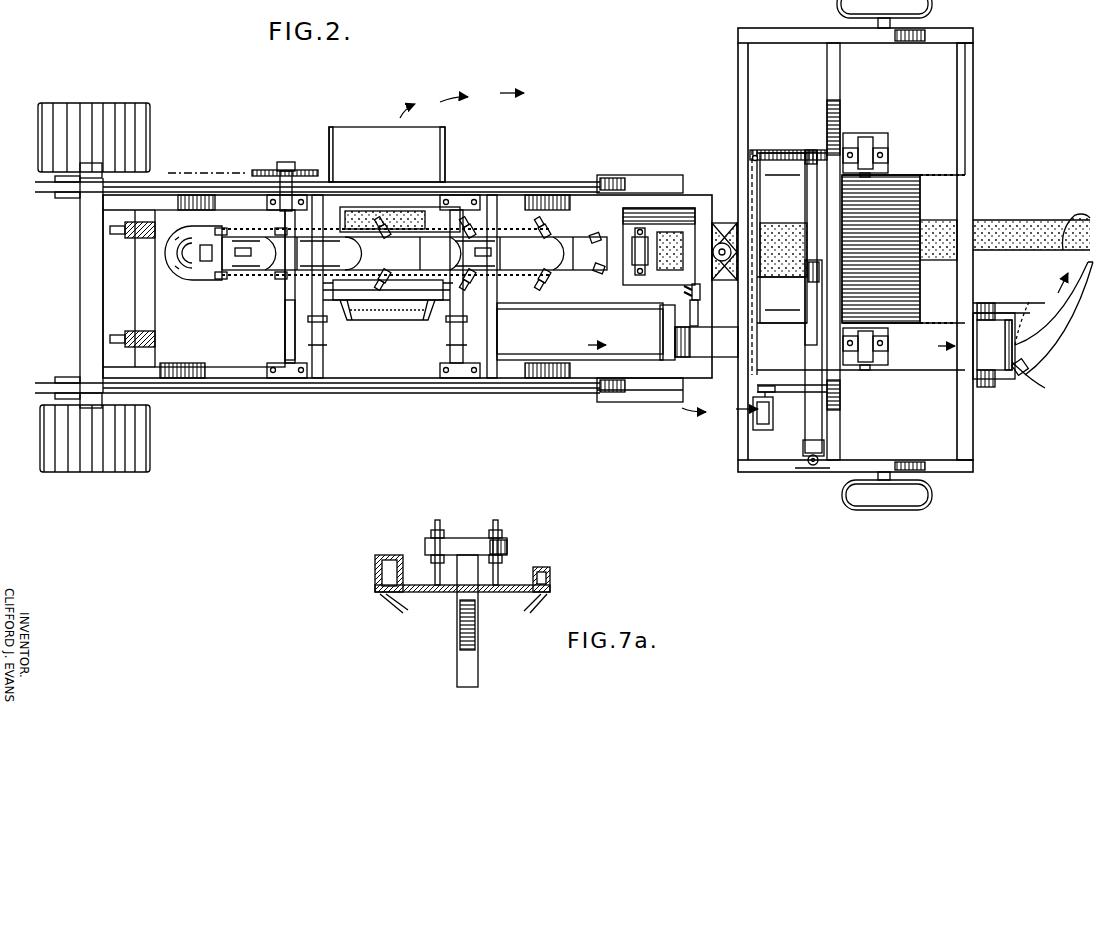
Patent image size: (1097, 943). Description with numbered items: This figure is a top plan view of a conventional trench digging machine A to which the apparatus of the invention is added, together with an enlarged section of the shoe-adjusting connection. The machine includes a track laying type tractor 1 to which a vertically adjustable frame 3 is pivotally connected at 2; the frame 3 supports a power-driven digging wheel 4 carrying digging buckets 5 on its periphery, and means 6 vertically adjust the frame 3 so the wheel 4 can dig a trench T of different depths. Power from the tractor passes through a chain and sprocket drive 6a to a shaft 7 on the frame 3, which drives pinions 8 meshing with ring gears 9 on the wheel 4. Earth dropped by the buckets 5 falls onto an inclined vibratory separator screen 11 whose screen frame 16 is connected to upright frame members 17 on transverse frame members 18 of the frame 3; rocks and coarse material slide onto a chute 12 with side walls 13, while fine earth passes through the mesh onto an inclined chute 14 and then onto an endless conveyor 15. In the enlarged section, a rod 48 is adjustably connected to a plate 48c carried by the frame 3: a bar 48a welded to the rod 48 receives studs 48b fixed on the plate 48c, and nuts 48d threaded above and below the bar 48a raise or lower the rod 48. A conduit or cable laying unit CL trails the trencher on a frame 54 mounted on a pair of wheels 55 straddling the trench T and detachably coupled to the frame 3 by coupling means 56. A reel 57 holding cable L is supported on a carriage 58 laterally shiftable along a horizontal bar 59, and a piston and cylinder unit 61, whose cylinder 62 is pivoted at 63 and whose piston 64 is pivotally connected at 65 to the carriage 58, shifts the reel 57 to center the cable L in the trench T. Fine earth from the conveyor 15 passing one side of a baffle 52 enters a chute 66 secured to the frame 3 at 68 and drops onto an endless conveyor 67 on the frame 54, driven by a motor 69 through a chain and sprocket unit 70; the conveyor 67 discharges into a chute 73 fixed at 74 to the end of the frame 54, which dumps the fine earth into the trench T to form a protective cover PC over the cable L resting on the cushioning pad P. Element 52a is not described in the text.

In FIG. 2, the track laying type tractor 1 is at (112, 474).
In FIG. 2, the pivotal connection 2 is at (140, 238).
In FIG. 2, the vertically adjustable frame 3 is at (256, 372).
In FIG. 7a, the vertically adjustable frame 3 is at (372, 569).
In FIG. 2, the power-driven digging wheel 4 is at (180, 278).
In FIG. 2, the digging buckets 5 is at (200, 262).
In FIG. 2, the vertical adjusting means 6 is at (176, 397).
In FIG. 2, the chain and sprocket drive 6a is at (260, 170).
In FIG. 2, the shaft 7 is at (284, 334).
In FIG. 2, the pinions 8 is at (280, 277).
In FIG. 2, the ring gears 9 is at (245, 276).
In FIG. 2, the vibratory separator screen 11 is at (383, 203).
In FIG. 2, the chute 12 is at (446, 140).
In FIG. 2, the side walls 13 is at (334, 150).
In FIG. 2, the inclined chute 14 is at (392, 313).
In FIG. 2, the endless conveyor 15 is at (545, 340).
In FIG. 2, the screen frame 16 is at (378, 306).
In FIG. 2, the upright frame members 17 is at (455, 318).
In FIG. 2, the transverse frame members 18 is at (462, 345).
In FIG. 7a, the rod 48 is at (468, 654).
In FIG. 2, the bar 48a is at (645, 263).
In FIG. 7a, the bar 48a is at (505, 550).
In FIG. 7a, the studs 48b is at (495, 525).
In FIG. 2, the plate 48c is at (684, 208).
In FIG. 7a, the plate 48c is at (428, 594).
In FIG. 7a, the nuts 48d is at (426, 550).
In FIG. 2, the baffle 52 is at (701, 296).
In FIG. 2, the coupling member 52a is at (678, 312).
In FIG. 2, the frame 54 is at (976, 436).
In FIG. 2, the wheels 55 is at (928, 496).
In FIG. 2, the coupling means 56 is at (722, 243).
In FIG. 2, the reel 57 is at (913, 172).
In FIG. 2, the carriage 58 is at (766, 148).
In FIG. 2, the horizontal bar 59 is at (840, 424).
In FIG. 2, the piston and cylinder unit 61 is at (805, 394).
In FIG. 2, the cylinder 62 is at (803, 440).
In FIG. 2, the pivot 63 is at (810, 466).
In FIG. 2, the piston 64 is at (805, 213).
In FIG. 2, the pivotal connection 65 is at (812, 150).
In FIG. 2, the chute 66 is at (706, 342).
In FIG. 2, the endless conveyor 67 is at (937, 352).
In FIG. 2, the securing point 68 is at (699, 318).
In FIG. 2, the motor 69 is at (755, 420).
In FIG. 2, the chain and sprocket unit 70 is at (776, 388).
In FIG. 2, the chute 73 is at (1058, 328).
In FIG. 2, the fixing point 74 is at (1022, 390).
In FIG. 2, the trench digging machine A is at (370, 396).
In FIG. 2, the conduit or cable laying unit CL is at (980, 122).
In FIG. 2, the cable L is at (784, 245).
In FIG. 2, the protective and cushioning pad P is at (990, 235).
In FIG. 2, the trench T is at (1016, 238).
In FIG. 2, the protective cover PC is at (1072, 238).